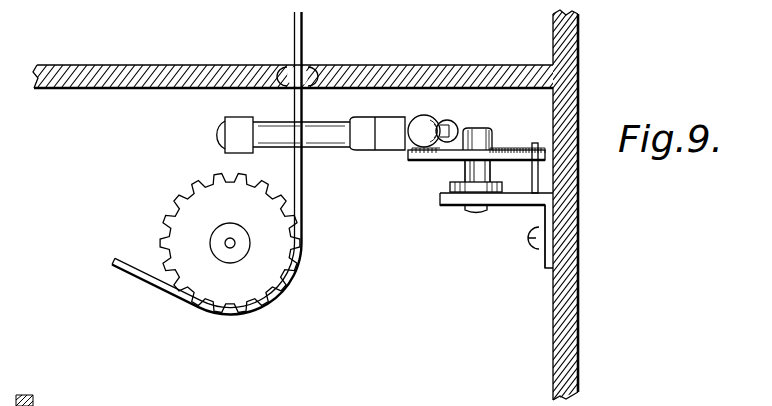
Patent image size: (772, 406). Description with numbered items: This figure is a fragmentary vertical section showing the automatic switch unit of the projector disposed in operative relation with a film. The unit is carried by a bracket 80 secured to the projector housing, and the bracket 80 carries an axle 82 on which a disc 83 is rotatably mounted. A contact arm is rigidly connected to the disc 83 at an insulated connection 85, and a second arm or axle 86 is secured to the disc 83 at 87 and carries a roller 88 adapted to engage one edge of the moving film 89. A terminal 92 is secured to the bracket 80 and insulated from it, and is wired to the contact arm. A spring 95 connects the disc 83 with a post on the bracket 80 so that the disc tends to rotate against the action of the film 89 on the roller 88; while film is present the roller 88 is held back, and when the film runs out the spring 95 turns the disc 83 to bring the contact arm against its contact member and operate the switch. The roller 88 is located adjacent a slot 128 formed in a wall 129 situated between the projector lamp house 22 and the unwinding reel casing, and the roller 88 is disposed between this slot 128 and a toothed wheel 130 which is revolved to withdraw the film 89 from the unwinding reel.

The lamp house 22 is at (571, 278).
The wall 129 is at (471, 48).
The slot 128 is at (342, 41).
The moving film 89 is at (303, 186).
The toothed wheel 130 is at (262, 293).
The roller 88 is at (313, 150).
The second arm or axle 86 is at (389, 125).
The connection of second arm to disc 87 is at (422, 122).
The connection of contact arm to disc 85 is at (450, 121).
The disc 83 is at (423, 161).
The spring 95 is at (510, 148).
The axle 82 is at (478, 127).
The terminal 92 is at (536, 188).
The bracket 80 is at (529, 196).